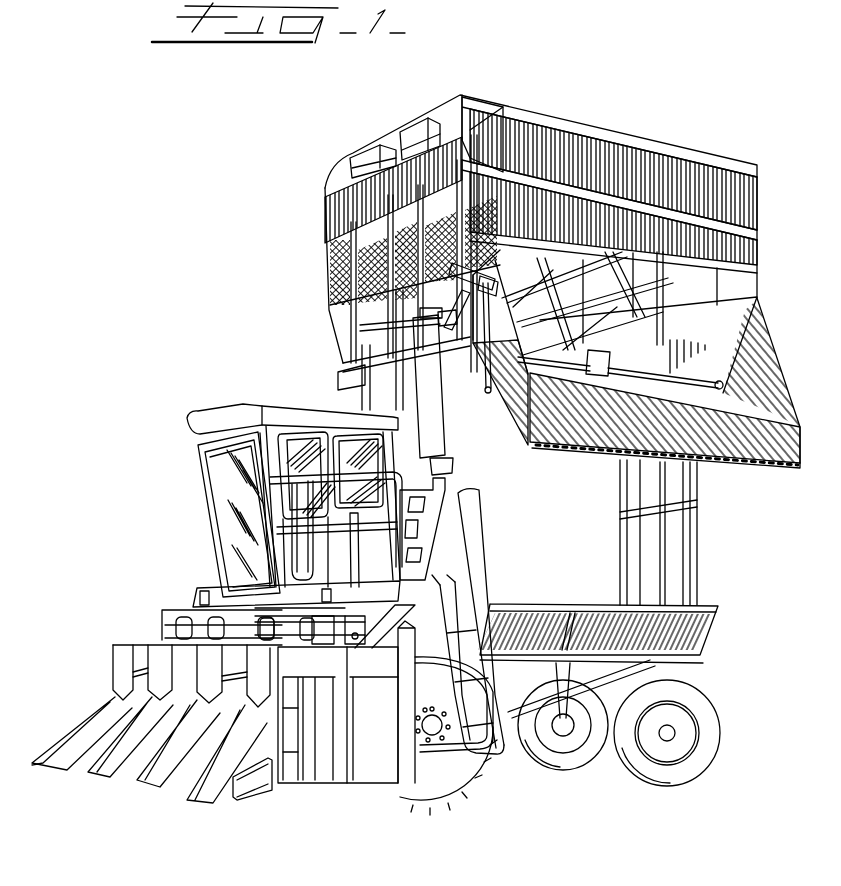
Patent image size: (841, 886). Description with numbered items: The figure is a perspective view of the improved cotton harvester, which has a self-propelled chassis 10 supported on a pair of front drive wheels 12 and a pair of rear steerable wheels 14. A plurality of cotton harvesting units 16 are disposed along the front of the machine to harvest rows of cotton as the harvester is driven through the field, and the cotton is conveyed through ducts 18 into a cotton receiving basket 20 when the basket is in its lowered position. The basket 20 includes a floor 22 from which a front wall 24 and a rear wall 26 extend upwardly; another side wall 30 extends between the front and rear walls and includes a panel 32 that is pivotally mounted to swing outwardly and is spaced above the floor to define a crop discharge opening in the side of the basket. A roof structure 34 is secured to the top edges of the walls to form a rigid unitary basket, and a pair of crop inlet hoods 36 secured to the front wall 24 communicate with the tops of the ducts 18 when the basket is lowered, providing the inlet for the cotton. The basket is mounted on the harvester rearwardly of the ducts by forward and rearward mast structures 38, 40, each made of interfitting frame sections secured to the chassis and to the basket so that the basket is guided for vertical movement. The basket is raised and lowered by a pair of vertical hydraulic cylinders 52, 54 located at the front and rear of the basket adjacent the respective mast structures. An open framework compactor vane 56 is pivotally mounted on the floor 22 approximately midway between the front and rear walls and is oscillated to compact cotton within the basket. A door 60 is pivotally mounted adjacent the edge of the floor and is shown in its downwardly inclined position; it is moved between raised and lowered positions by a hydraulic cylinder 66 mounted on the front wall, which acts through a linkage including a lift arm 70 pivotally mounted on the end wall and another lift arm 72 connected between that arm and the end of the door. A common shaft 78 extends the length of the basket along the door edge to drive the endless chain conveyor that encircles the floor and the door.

The self-propelled chassis 10 is at (551, 598).
The front drive wheels 12 is at (398, 805).
The rear steerable wheels 14 is at (650, 767).
The cotton harvesting units 16 is at (54, 766).
The ducts 18 is at (418, 422).
The cotton receiving basket 20 is at (533, 215).
The floor 22 is at (453, 385).
The front wall 24 is at (343, 267).
The rear wall 26 is at (732, 340).
The side wall 30 is at (742, 203).
The panel 32 is at (750, 252).
The roof structure 34 is at (528, 105).
The crop inlet hoods 36 is at (434, 131).
The forward mast structure 38 is at (360, 393).
The rearward mast structure 40 is at (691, 532).
The vertical hydraulic cylinder 52 is at (358, 322).
The vertical hydraulic cylinder 54 is at (660, 573).
The compactor vane 56 is at (548, 266).
The door 60 is at (735, 424).
The hydraulic cylinder 66 is at (468, 318).
The lift arm 70 is at (500, 284).
The lift arm 72 is at (505, 341).
The common shaft 78 is at (620, 372).